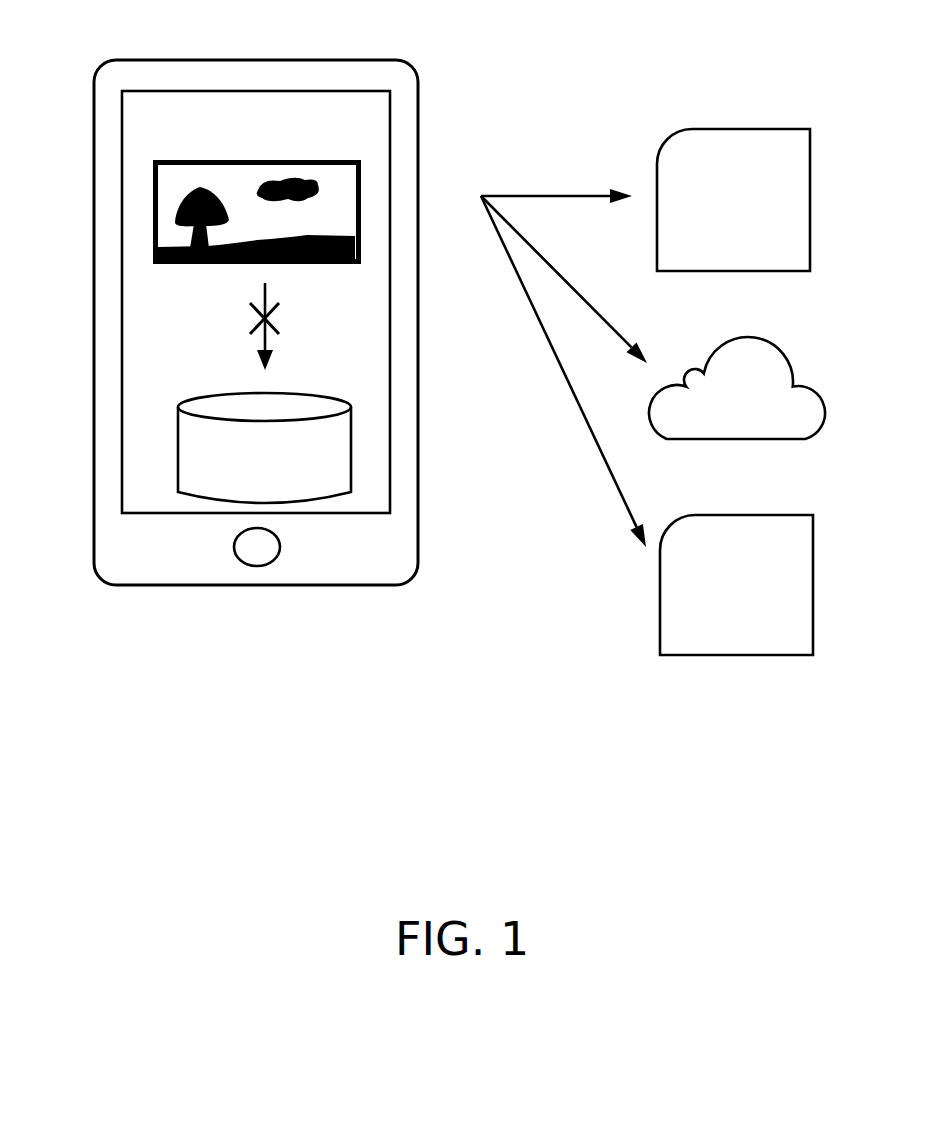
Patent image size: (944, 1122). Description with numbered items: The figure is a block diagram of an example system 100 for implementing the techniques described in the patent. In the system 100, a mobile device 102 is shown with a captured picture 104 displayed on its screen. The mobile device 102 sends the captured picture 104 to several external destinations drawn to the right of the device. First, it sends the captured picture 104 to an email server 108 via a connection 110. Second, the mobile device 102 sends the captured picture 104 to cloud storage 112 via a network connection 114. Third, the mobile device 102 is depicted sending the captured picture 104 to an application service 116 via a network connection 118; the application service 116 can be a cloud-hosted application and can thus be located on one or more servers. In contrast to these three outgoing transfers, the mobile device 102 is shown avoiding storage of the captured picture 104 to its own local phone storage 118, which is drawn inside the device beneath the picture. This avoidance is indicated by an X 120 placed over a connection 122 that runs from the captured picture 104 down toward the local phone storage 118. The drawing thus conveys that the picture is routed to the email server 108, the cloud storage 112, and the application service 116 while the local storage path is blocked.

The system 100 is at (481, 910).
The mobile device 102 is at (178, 58).
The captured picture 104 is at (153, 200).
The email server 108 is at (747, 126).
The connection 110 is at (598, 198).
The cloud storage 112 is at (773, 343).
The network connection 114 is at (602, 315).
The application service 116 is at (737, 657).
The network connection / local phone storage 118 is at (178, 452).
The X 120 is at (277, 328).
The connection 122 is at (263, 296).